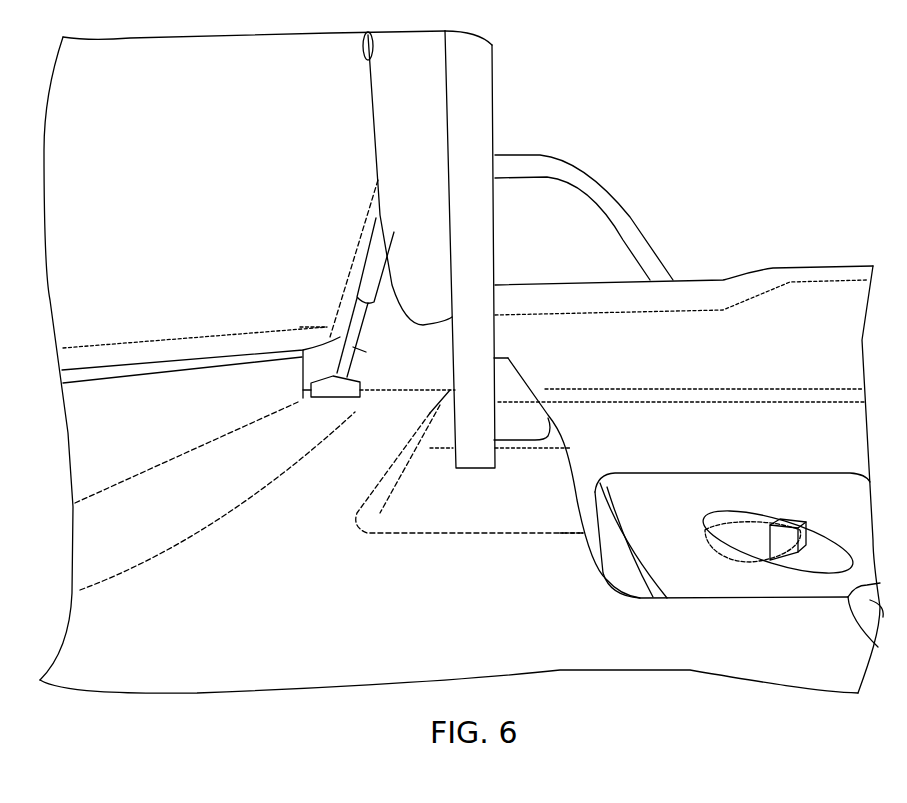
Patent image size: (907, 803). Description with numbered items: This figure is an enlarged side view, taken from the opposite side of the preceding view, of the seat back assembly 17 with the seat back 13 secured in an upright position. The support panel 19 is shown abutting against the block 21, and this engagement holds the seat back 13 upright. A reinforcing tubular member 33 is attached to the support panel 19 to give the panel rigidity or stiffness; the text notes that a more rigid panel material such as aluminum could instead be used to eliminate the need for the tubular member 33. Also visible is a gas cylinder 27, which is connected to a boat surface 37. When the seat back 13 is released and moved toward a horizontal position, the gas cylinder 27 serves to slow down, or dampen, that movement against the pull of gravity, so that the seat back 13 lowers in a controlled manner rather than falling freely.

The seat back 13 is at (124, 112).
The seat back assembly 17 is at (565, 370).
The support panel 19 is at (478, 340).
The block 21 is at (520, 395).
The gas cylinder 27 is at (337, 387).
The reinforcing tubular member 33 is at (388, 143).
The boat surface 37 is at (332, 448).